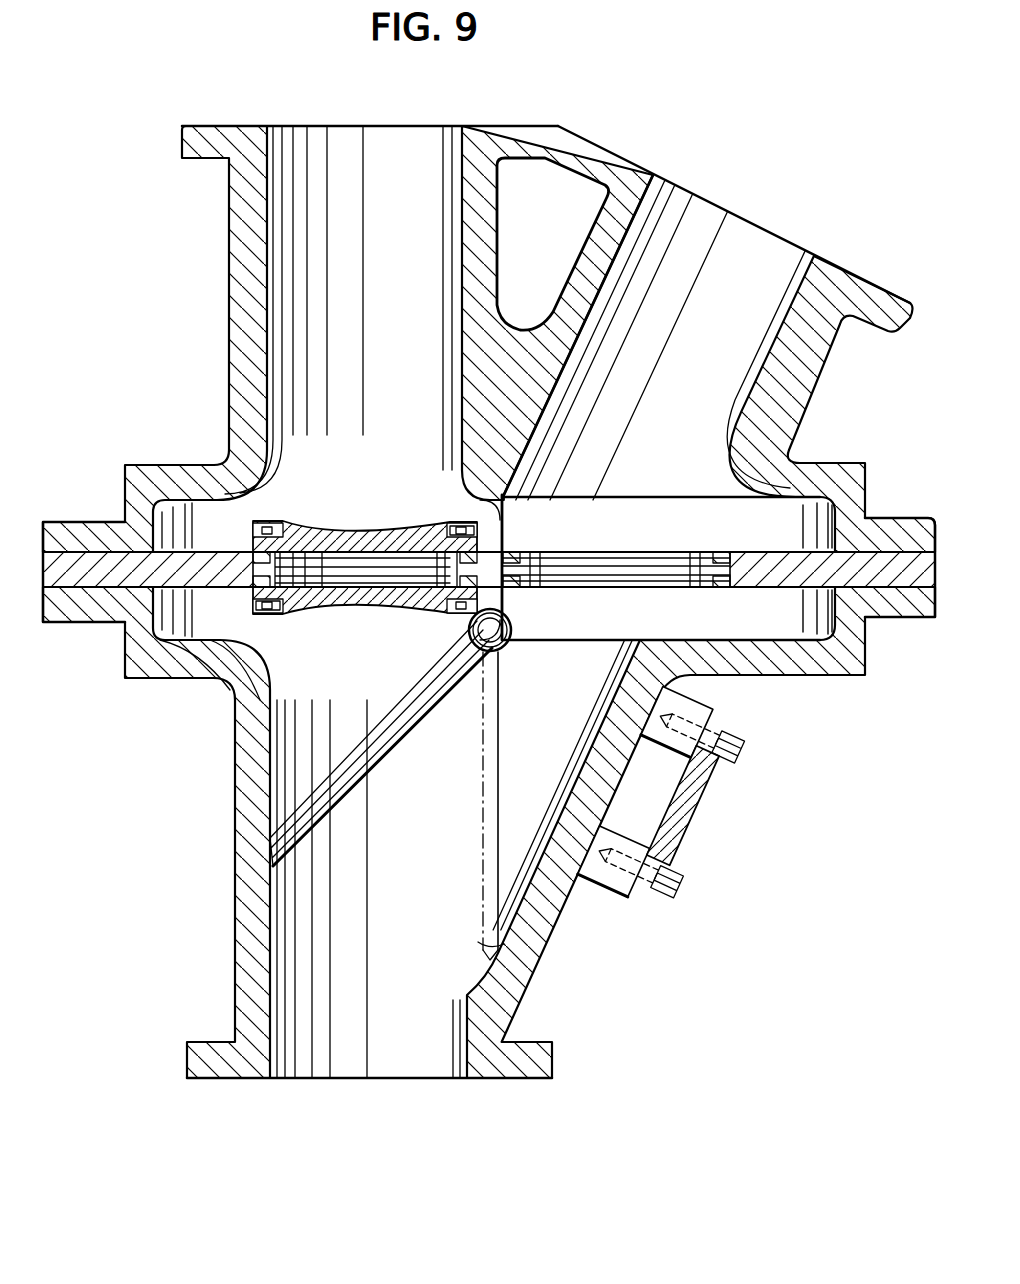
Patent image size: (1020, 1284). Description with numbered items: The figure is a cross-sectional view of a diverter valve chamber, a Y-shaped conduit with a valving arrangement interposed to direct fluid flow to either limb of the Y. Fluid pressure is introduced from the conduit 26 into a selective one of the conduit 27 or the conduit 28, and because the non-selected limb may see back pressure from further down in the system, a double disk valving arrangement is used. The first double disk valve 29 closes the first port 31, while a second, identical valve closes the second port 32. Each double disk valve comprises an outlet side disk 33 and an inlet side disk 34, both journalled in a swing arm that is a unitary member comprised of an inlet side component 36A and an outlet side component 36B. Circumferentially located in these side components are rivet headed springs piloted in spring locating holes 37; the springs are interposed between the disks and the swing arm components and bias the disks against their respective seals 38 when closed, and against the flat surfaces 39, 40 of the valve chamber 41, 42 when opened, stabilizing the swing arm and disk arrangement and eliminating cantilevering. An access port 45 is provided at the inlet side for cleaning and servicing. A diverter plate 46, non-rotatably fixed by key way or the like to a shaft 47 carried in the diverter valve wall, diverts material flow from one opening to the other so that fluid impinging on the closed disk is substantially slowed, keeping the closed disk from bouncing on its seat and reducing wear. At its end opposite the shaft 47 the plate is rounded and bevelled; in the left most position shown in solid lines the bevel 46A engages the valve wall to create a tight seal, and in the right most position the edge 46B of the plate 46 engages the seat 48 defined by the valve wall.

The conduit 26 is at (407, 1057).
The conduit 27 is at (712, 215).
The conduit 28 is at (318, 135).
The first double disk valve 29 is at (332, 512).
The first port 31 is at (370, 598).
The second port 32 is at (702, 568).
The outlet side disk 33 is at (387, 530).
The inlet side disk 34 is at (360, 640).
The inlet side component 36A is at (272, 612).
The outlet side component 36B is at (257, 522).
The spring locating holes 37 is at (462, 528).
The seals 38 is at (257, 558).
The flat surface 39 is at (177, 610).
The flat surface 40 is at (122, 520).
The valve chamber 41 is at (767, 622).
The valve chamber 42 is at (727, 518).
The access port 45 is at (700, 793).
The diverter plate 46 is at (387, 740).
The bevel 46A is at (470, 945).
The edge 46B is at (513, 940).
The shaft 47 is at (497, 640).
The seat 48 is at (485, 950).